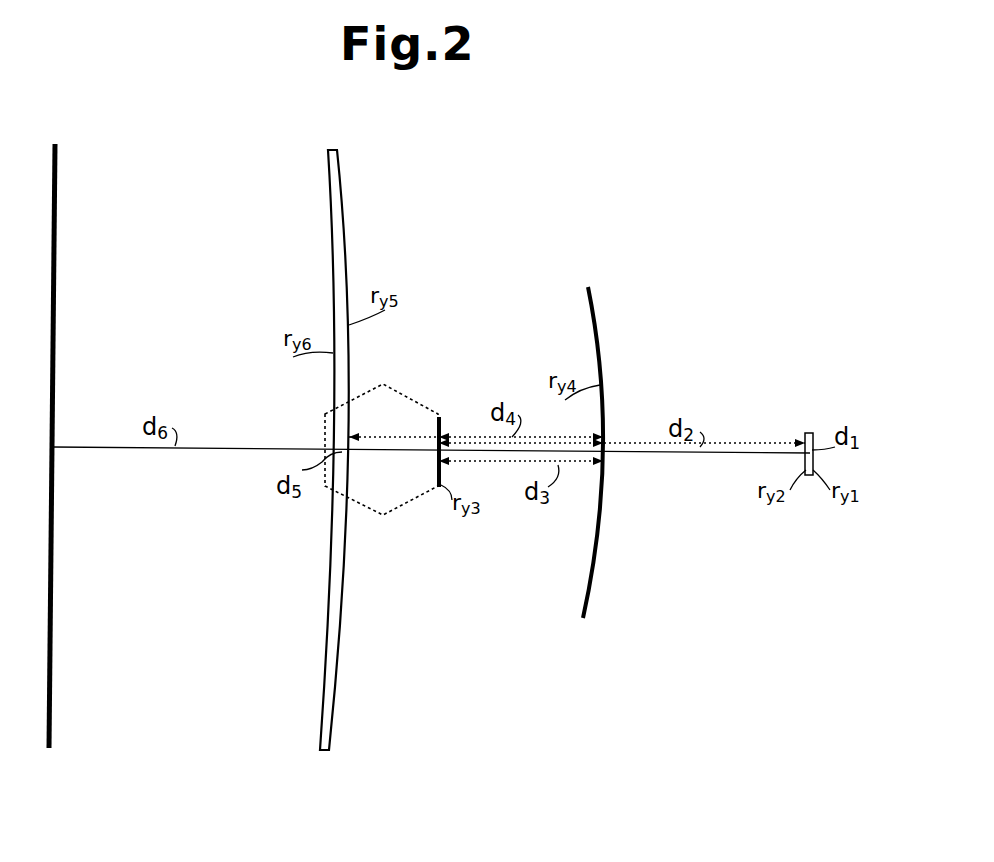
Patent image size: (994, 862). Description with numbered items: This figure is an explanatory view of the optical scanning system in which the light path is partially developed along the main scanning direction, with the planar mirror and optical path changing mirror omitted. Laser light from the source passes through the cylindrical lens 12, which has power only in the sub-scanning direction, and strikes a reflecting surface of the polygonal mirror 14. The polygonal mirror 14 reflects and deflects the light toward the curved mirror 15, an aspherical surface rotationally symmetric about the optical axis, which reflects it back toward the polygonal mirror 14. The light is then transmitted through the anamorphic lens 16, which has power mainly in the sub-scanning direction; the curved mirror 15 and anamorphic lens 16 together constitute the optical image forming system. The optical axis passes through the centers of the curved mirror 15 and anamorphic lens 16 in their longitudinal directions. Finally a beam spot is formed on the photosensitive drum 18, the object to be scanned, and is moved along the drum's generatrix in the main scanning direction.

The cylindrical lens 12 is at (806, 435).
The polygonal mirror 14 is at (436, 490).
The curved mirror 15 is at (588, 598).
The anamorphic lens 16 is at (333, 703).
The photosensitive drum 18 is at (52, 620).